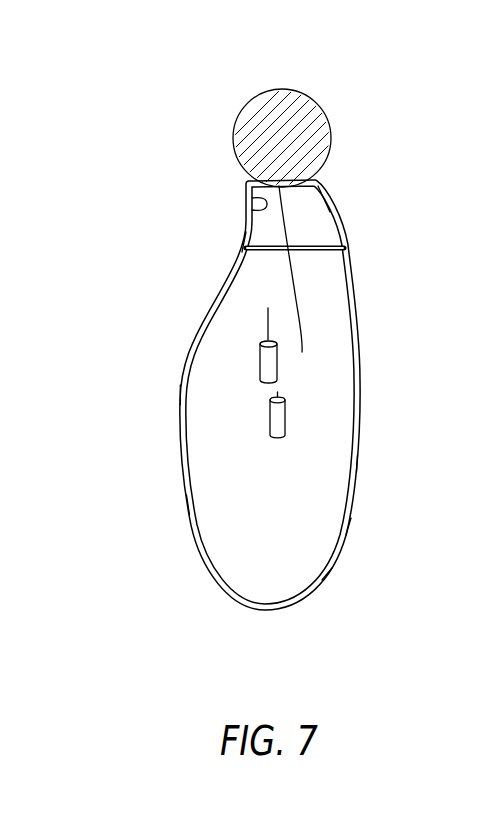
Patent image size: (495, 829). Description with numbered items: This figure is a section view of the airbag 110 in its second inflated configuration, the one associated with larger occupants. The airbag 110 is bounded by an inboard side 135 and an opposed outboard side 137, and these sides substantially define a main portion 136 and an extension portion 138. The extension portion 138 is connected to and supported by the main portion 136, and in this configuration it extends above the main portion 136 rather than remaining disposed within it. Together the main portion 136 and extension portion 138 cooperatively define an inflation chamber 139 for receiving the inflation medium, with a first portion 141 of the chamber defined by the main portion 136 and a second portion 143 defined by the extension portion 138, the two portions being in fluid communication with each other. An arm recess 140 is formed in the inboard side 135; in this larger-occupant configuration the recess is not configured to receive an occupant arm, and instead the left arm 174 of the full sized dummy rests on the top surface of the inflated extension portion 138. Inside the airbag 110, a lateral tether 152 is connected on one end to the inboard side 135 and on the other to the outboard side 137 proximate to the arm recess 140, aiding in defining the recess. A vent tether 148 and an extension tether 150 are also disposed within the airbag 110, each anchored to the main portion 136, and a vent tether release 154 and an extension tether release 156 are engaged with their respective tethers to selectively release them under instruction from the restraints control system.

The airbag 110 is at (185, 330).
The inboard side 135 is at (182, 395).
The main portion 136 is at (350, 527).
The outboard side 137 is at (358, 463).
The extension portion 138 is at (323, 178).
The inflation chamber 139 is at (197, 527).
The arm recess 140 is at (240, 240).
The first portion of inflation chamber 141 is at (314, 582).
The second portion of inflation chamber 143 is at (248, 208).
The vent tether 148 is at (265, 318).
The extension tether 150 is at (295, 312).
The lateral tether 152 is at (320, 247).
The vent tether release 154 is at (260, 360).
The extension tether release 156 is at (287, 409).
The left arm 174 is at (252, 95).